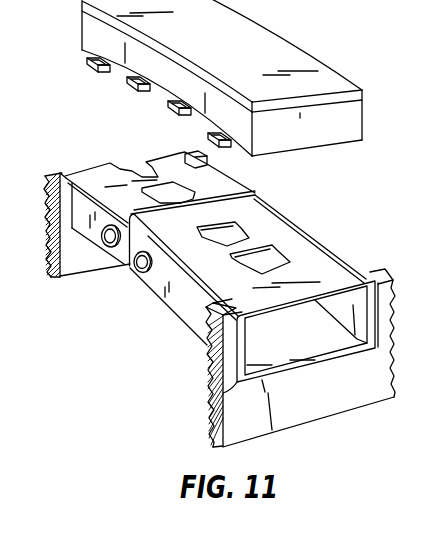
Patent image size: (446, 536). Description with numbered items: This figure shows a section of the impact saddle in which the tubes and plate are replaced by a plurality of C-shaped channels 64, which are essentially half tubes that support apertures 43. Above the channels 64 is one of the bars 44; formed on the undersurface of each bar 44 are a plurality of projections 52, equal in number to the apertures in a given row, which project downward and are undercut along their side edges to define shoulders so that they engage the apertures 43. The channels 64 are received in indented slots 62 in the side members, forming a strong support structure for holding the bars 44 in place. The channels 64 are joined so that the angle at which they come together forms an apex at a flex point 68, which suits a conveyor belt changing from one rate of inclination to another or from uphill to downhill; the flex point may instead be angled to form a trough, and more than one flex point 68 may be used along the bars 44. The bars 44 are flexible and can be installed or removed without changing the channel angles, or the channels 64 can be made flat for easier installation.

The bar 44 is at (102, 106).
The projections 52 is at (188, 115).
The C-shaped channels 64 is at (180, 321).
The flex point 68 is at (236, 196).
The apertures 43 is at (281, 247).
The indented slots 62 is at (222, 395).